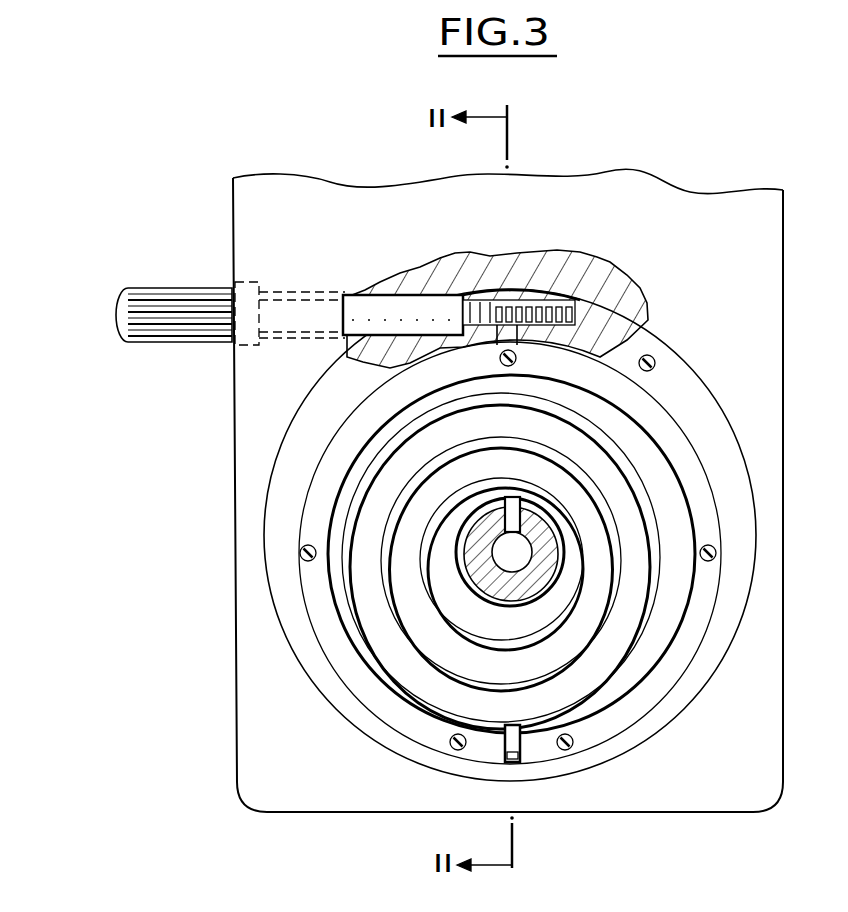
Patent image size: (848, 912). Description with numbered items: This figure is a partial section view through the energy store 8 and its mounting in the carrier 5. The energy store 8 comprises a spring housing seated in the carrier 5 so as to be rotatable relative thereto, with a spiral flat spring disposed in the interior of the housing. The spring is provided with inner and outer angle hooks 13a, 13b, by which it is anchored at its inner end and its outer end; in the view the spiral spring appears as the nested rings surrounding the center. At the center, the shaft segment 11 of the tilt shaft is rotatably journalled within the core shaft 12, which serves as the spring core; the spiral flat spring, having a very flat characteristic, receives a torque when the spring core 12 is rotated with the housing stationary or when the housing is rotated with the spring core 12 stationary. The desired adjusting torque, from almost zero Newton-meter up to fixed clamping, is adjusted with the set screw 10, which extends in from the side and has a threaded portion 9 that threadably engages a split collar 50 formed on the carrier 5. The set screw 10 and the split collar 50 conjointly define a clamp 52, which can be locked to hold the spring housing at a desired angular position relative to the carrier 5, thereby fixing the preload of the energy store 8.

The carrier 5 is at (677, 217).
The energy store 8 is at (350, 590).
The threaded portion 9 is at (506, 300).
The set screw 10 is at (158, 327).
The shaft segment 11 is at (548, 548).
The core shaft 12 is at (534, 566).
The inner angle hook 13a is at (520, 755).
The outer angle hook 13b is at (518, 522).
The split collar 50 is at (290, 468).
The clamp 52 is at (545, 300).